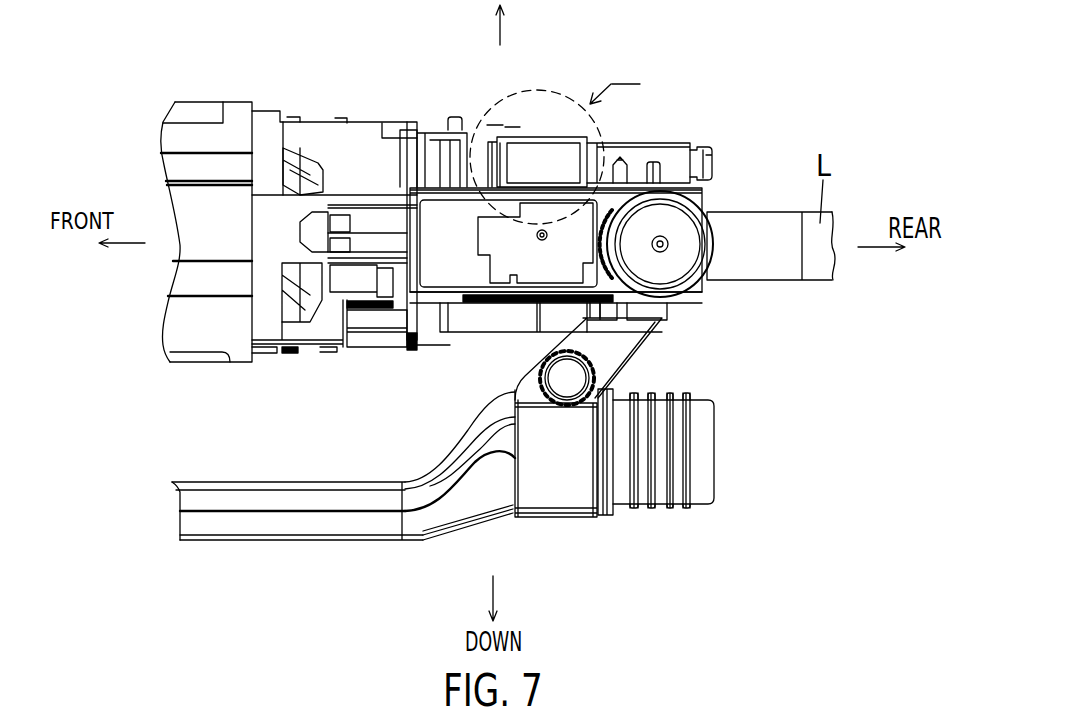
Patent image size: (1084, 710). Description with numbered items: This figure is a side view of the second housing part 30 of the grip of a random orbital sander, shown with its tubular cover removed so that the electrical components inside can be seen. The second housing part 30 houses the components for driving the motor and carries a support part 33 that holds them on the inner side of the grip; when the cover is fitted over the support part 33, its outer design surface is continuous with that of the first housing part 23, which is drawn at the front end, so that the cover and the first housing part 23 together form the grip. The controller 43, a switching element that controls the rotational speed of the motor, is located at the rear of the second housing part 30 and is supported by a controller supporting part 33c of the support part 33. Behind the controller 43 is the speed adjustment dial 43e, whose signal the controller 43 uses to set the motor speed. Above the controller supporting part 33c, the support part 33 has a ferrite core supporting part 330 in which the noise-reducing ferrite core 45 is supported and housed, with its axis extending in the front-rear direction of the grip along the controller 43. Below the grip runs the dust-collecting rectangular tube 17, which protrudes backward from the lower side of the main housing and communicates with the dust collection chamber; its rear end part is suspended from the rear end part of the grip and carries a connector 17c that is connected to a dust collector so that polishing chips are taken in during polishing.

The dust-collecting rectangular tube 17 is at (298, 522).
The connector 17c is at (678, 450).
The first housing part 23 is at (208, 108).
The second housing part 30 is at (378, 83).
The support part 33 is at (317, 128).
The controller supporting part 33c is at (437, 130).
The ferrite core supporting part 330 is at (542, 120).
The controller 43 is at (508, 265).
The speed adjustment dial 43e is at (680, 258).
The ferrite core 45 is at (553, 146).